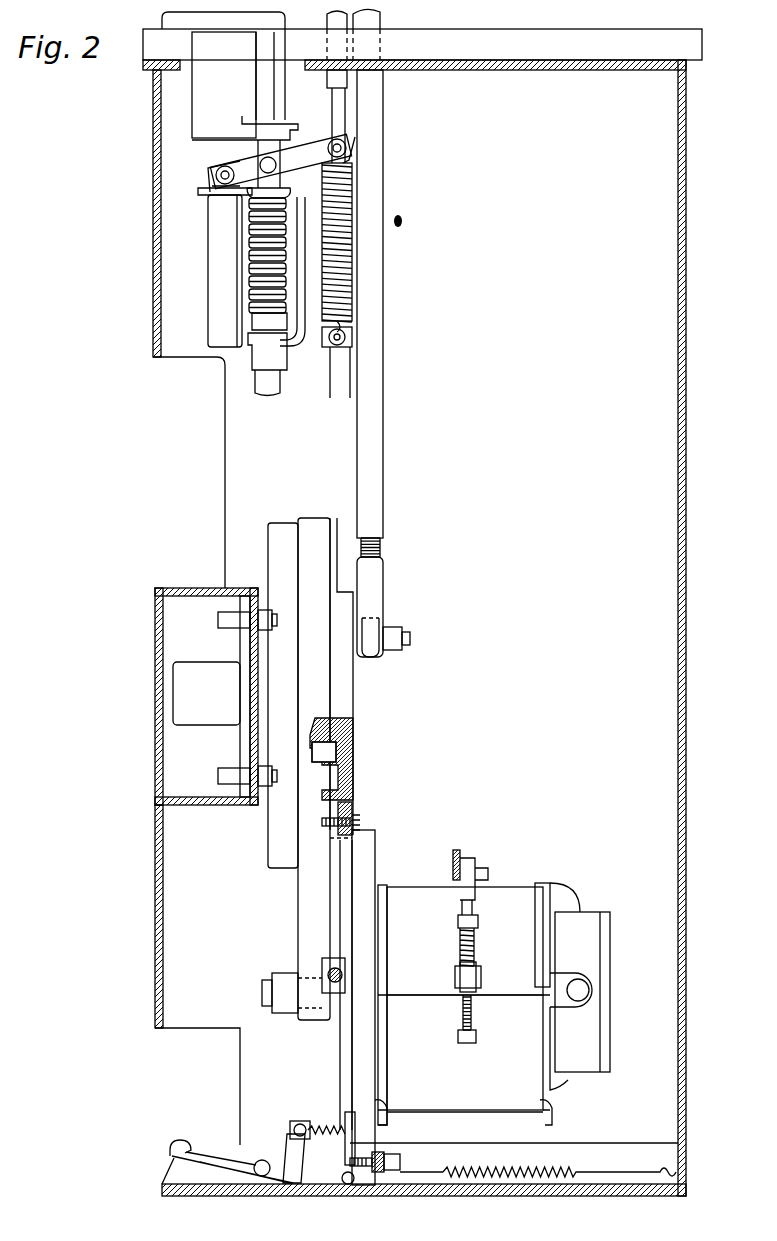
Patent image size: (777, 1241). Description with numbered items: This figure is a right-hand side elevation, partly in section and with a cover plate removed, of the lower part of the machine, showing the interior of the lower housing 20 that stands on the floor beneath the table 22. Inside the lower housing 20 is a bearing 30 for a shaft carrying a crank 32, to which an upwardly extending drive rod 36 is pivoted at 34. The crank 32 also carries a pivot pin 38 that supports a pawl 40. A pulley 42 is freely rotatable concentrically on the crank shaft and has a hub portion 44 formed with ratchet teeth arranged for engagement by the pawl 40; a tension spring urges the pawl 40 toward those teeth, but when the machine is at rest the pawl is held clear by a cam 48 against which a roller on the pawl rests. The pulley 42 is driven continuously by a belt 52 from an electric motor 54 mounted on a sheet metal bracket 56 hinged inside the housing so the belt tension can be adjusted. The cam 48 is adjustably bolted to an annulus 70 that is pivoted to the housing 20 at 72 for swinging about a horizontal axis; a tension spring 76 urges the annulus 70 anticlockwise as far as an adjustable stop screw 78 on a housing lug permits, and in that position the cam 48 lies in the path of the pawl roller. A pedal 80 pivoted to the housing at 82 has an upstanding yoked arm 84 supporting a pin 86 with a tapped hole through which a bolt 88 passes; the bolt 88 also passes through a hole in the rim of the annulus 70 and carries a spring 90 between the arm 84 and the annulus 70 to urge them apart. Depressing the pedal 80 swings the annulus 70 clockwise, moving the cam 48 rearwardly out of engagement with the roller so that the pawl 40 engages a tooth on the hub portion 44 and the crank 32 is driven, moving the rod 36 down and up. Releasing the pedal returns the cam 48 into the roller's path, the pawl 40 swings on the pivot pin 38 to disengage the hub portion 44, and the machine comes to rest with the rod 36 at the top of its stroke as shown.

The lower housing 20 is at (687, 650).
The table 22 is at (702, 50).
The bearing 30 is at (212, 706).
The crank 32 is at (353, 705).
The pivot 34 is at (362, 660).
The drive rod 36 is at (383, 530).
The pivot pin 38 is at (316, 775).
The pawl 40 is at (318, 755).
The pulley 42 is at (272, 523).
The hub portion 44 is at (350, 740).
The cam 48 is at (352, 812).
The belt 52 is at (318, 518).
The electric motor 54 is at (440, 954).
The sheet metal bracket 56 is at (442, 1054).
The annulus 70 is at (375, 868).
The pivot 72 is at (322, 972).
The tension spring 76 is at (570, 1172).
The adjustable stop screw 78 is at (400, 1162).
The pedal 80 is at (182, 1140).
The pivot 82 is at (262, 1160).
The yoked arm 84 is at (305, 1165).
The pin 86 is at (298, 1121).
The bolt 88 is at (325, 1128).
The spring 90 is at (360, 1142).